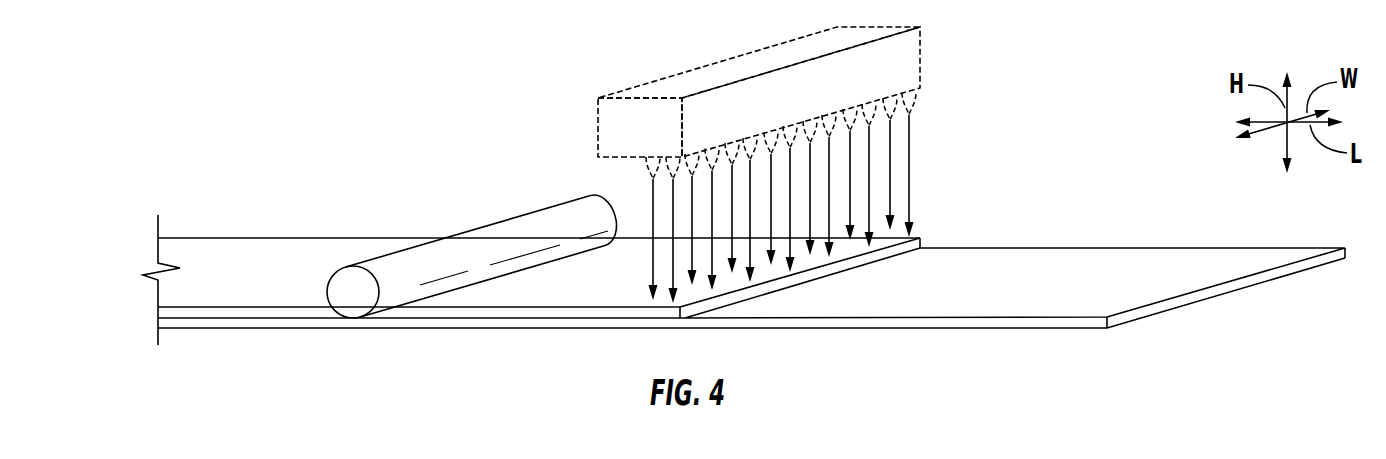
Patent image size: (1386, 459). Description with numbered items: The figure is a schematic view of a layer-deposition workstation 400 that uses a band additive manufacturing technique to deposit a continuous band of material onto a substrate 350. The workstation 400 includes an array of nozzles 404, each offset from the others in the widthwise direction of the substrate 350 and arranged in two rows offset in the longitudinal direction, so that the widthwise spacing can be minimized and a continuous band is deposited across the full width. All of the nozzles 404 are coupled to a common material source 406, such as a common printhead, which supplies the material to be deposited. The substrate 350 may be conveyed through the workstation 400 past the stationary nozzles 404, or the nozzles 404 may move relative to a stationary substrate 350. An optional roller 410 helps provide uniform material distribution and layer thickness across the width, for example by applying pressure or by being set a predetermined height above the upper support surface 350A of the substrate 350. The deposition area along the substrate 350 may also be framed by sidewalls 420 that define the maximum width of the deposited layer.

The layer-deposition workstation 400 is at (254, 148).
The nozzles 404 is at (645, 173).
The common material source 406 is at (666, 85).
The roller 410 is at (532, 223).
The sidewalls 420 is at (271, 252).
The substrate 350 is at (1038, 262).
The upper support surface 350A is at (1123, 262).